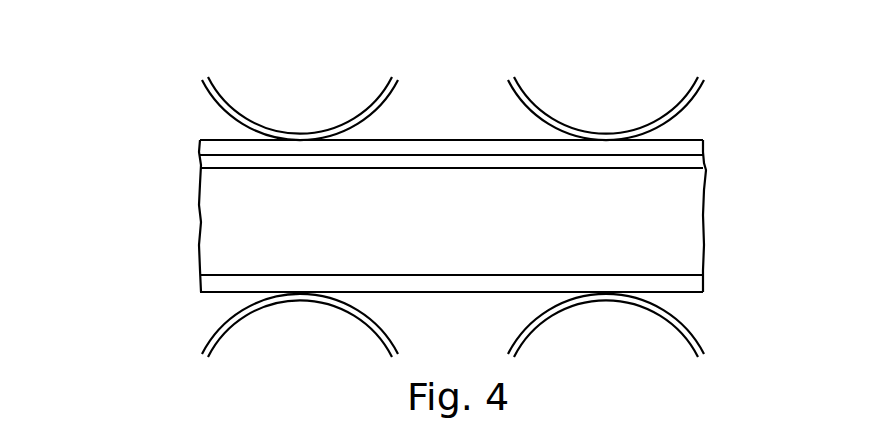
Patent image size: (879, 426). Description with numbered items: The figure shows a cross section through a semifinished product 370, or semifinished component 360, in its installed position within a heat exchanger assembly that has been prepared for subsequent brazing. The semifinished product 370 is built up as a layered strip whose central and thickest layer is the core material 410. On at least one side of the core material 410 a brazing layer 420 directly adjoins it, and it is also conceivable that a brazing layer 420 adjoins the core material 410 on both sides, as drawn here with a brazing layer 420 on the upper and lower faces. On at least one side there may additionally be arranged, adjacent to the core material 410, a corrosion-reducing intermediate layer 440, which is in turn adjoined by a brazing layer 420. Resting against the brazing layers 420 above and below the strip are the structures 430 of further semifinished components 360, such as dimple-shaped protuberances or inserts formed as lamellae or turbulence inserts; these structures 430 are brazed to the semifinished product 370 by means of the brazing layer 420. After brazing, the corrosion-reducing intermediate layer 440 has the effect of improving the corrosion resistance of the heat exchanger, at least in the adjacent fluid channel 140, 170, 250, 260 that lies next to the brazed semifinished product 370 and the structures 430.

The fluid channel 140 is at (453, 88).
The fluid channel 250 is at (508, 62).
The fluid channel 170 is at (453, 325).
The fluid channel 260 is at (499, 338).
The semifinished component 360 is at (413, 218).
The semifinished product 370 is at (413, 218).
The core material 410 is at (215, 188).
The brazing layer 420 is at (704, 143).
The structures 430 is at (237, 105).
The corrosion-reducing intermediate layer 440 is at (705, 163).